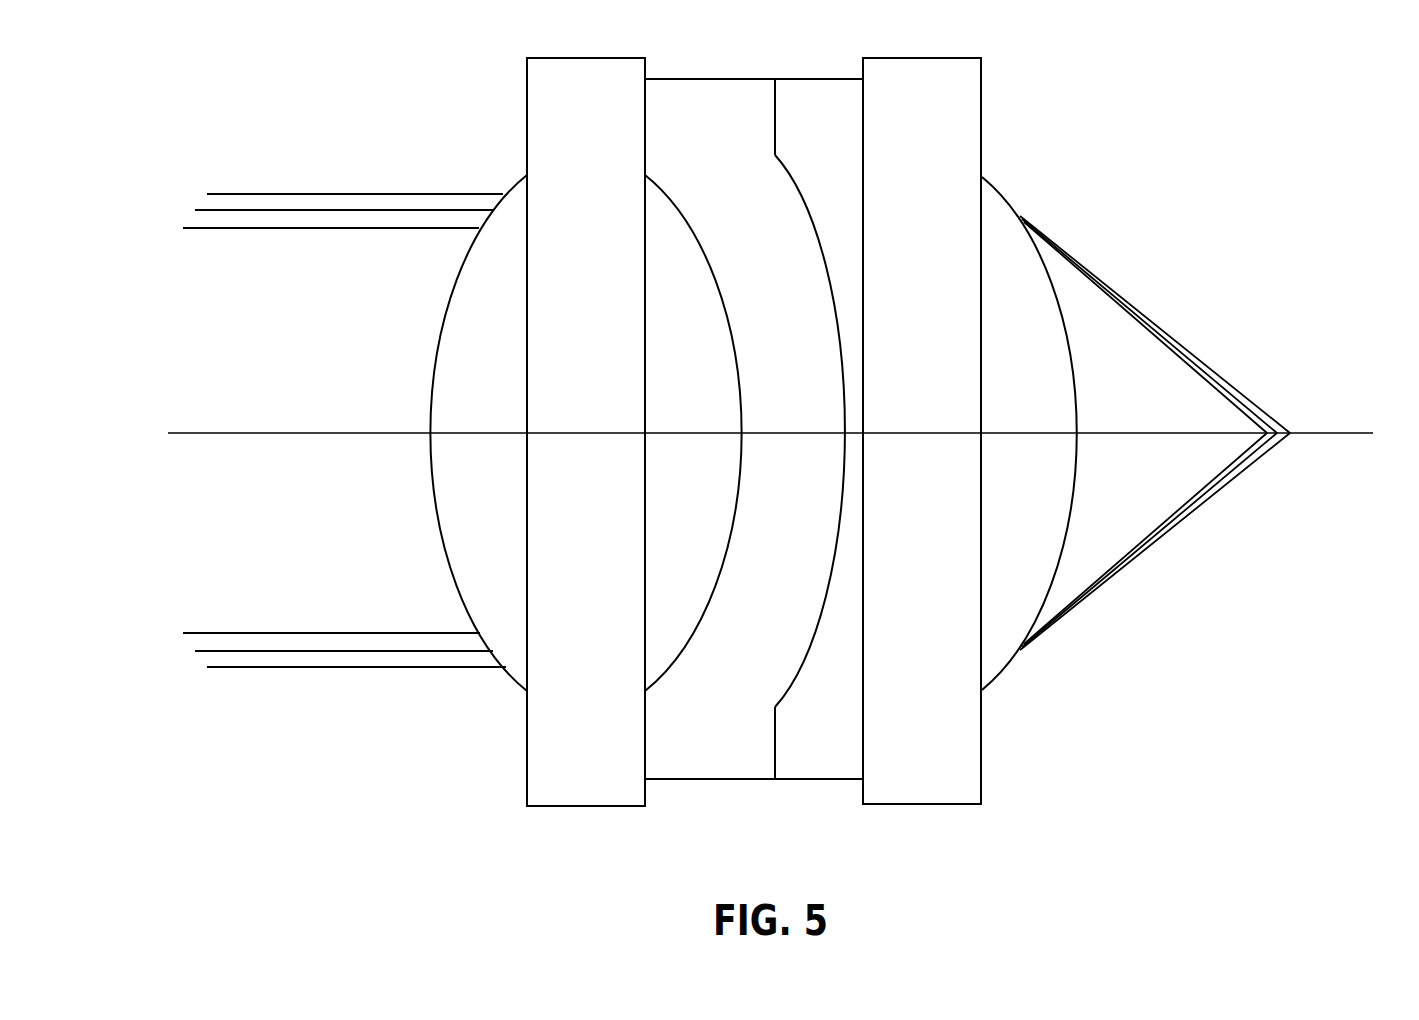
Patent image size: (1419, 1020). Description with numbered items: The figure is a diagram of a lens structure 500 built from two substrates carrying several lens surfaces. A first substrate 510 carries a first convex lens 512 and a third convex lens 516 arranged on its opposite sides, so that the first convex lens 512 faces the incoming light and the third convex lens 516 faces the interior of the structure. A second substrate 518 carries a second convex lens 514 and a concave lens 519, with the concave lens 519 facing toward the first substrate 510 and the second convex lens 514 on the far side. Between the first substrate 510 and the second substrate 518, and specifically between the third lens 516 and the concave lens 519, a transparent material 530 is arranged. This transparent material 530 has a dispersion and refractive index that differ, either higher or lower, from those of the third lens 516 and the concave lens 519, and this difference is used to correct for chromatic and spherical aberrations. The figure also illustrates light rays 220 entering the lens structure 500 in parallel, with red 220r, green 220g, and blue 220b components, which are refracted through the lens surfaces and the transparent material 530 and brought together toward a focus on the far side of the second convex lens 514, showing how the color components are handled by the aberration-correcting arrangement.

The lens structure 500 is at (1175, 73).
The light rays 220 is at (304, 194).
The blue component 220b is at (1137, 311).
The red component 220r is at (1195, 361).
The green component 220g is at (1263, 409).
The first substrate 510 is at (620, 363).
The first convex lens 512 is at (514, 363).
The second convex lens 514 is at (1060, 361).
The third convex lens 516 is at (719, 363).
The second substrate 518 is at (959, 363).
The concave lens 519 is at (851, 141).
The transparent material 530 is at (745, 141).